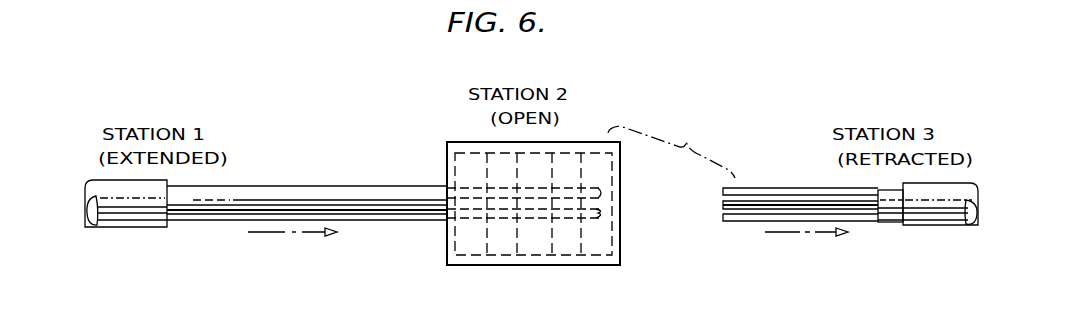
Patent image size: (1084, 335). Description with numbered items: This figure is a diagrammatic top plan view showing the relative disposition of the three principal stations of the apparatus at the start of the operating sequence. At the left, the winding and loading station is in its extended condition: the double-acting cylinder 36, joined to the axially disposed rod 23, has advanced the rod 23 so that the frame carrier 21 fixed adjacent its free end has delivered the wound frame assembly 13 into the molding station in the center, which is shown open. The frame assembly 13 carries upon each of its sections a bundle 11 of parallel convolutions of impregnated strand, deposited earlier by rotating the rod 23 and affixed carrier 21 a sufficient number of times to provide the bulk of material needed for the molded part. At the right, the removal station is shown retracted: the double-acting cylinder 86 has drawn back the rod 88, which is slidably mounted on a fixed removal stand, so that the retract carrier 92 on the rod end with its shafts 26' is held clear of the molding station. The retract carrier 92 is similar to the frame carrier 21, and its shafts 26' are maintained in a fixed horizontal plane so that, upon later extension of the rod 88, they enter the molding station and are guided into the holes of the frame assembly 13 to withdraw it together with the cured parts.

The bundle 11 is at (578, 236).
The frame assembly 13 is at (504, 268).
The frame carrier 21 is at (420, 230).
The rod 23 is at (315, 200).
The shafts 26' is at (800, 188).
The double-acting cylinder 36 is at (127, 208).
The double-acting cylinder 86 is at (928, 210).
The rod 88 is at (725, 205).
The retract carrier 92 is at (891, 230).